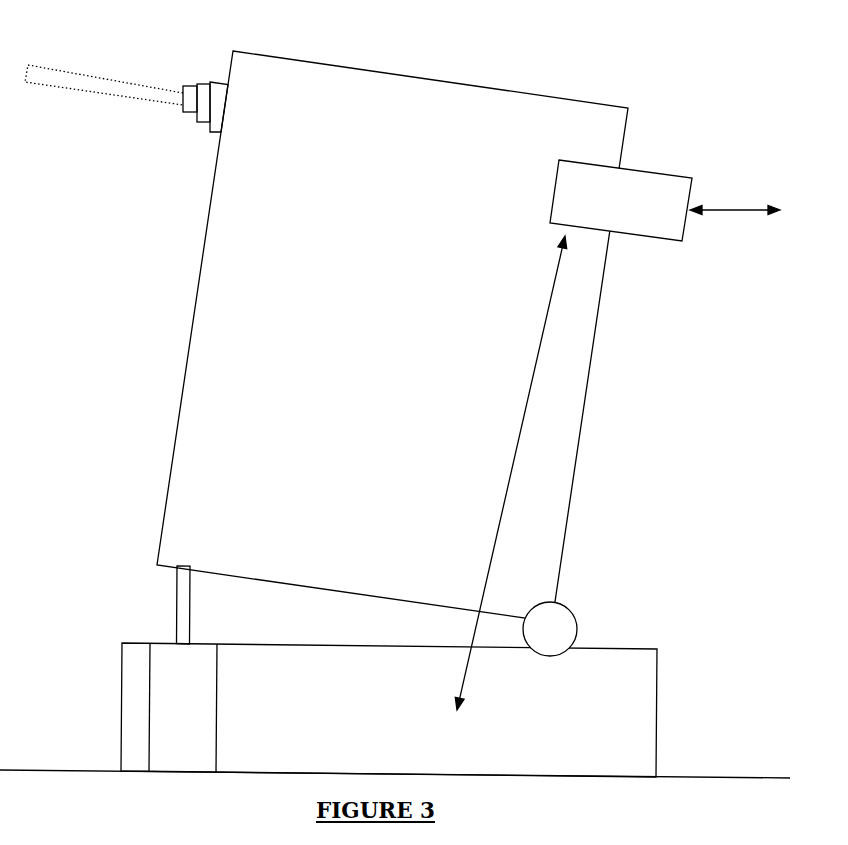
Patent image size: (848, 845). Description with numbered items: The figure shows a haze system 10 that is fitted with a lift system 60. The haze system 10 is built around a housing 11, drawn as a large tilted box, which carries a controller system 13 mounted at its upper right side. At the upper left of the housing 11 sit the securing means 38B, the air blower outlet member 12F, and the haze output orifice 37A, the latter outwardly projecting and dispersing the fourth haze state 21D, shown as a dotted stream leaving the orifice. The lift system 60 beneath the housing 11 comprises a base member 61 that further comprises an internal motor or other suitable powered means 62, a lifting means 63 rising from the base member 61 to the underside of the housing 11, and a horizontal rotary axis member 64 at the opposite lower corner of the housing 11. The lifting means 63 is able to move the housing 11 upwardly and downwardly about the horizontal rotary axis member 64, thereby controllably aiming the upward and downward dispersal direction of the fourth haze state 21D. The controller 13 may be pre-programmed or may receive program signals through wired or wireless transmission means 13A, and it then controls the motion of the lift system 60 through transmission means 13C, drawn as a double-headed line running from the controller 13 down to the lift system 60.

The haze system 10 is at (402, 366).
The housing 11 is at (392, 336).
The air blower outlet member 12F is at (192, 76).
The controller system 13 is at (621, 200).
The wired or wireless transmission means 13A is at (735, 220).
The transmission means 13C is at (510, 473).
The fourth haze state 21D is at (104, 92).
The haze output orifice 37A is at (173, 119).
The securing means 38B is at (209, 74).
The lift system 60 is at (389, 671).
The base member 61 is at (389, 710).
The internal motor or other suitable powered means 62 is at (183, 707).
The lifting means 63 is at (160, 605).
The horizontal rotary axis member 64 is at (550, 629).